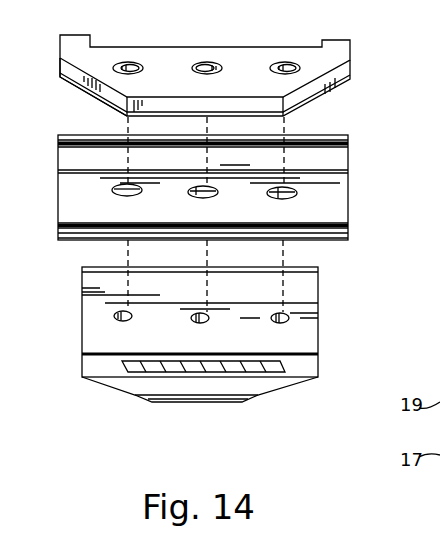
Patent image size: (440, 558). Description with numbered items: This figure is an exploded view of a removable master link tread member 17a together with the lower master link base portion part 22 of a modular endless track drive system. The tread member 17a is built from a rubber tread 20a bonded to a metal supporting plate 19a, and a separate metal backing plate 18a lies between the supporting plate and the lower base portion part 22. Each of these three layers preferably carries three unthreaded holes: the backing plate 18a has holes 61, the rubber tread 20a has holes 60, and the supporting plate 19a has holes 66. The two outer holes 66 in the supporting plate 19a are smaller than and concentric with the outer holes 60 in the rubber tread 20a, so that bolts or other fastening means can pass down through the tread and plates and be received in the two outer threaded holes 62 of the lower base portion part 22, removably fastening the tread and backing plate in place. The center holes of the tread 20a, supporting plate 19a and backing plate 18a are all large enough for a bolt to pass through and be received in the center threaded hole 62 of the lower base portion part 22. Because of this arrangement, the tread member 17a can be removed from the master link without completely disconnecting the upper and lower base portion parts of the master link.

The master link tread member 17a is at (219, 68).
The metal backing plate 18a is at (243, 187).
The metal supporting plate 19a is at (100, 103).
The rubber tread 20a is at (255, 65).
The lower master link base portion part 22 is at (205, 334).
The unthreaded holes of rubber tread 60 is at (207, 61).
The unthreaded holes of backing plate 61 is at (213, 197).
The threaded holes 62 is at (115, 318).
The unthreaded holes of supporting plate 66 is at (134, 61).